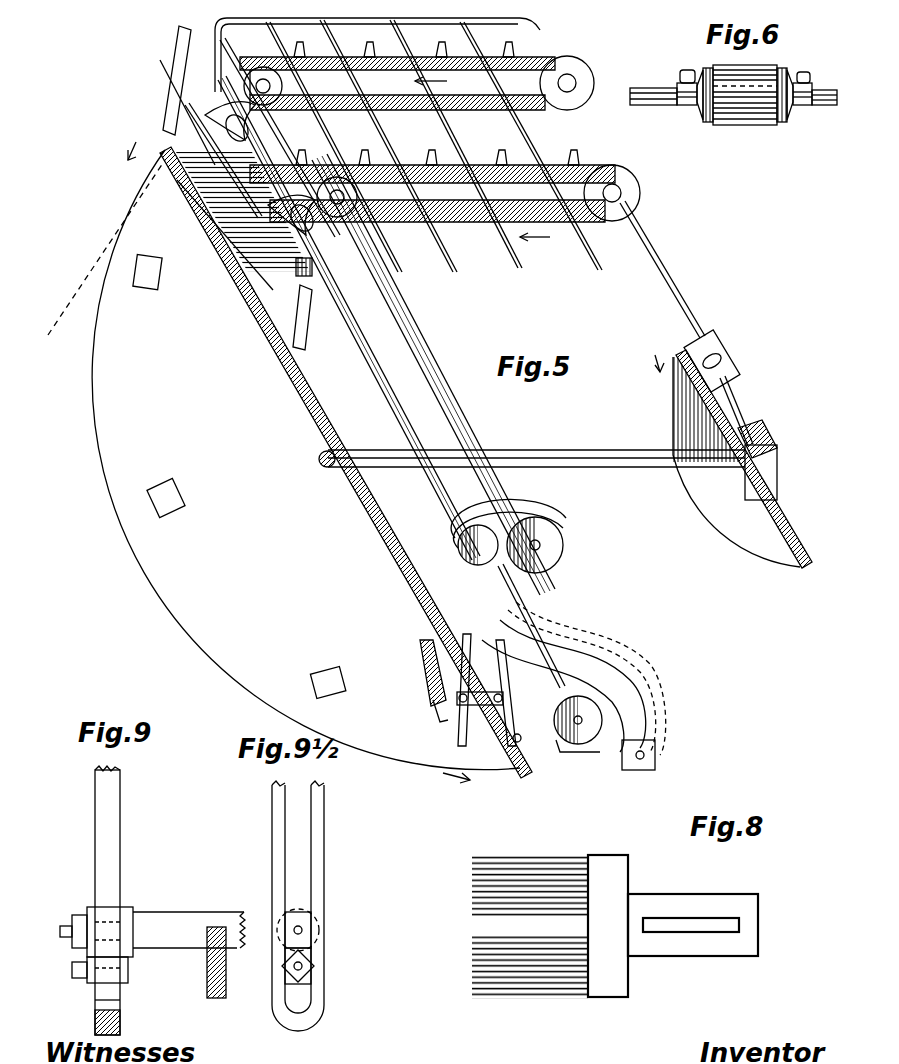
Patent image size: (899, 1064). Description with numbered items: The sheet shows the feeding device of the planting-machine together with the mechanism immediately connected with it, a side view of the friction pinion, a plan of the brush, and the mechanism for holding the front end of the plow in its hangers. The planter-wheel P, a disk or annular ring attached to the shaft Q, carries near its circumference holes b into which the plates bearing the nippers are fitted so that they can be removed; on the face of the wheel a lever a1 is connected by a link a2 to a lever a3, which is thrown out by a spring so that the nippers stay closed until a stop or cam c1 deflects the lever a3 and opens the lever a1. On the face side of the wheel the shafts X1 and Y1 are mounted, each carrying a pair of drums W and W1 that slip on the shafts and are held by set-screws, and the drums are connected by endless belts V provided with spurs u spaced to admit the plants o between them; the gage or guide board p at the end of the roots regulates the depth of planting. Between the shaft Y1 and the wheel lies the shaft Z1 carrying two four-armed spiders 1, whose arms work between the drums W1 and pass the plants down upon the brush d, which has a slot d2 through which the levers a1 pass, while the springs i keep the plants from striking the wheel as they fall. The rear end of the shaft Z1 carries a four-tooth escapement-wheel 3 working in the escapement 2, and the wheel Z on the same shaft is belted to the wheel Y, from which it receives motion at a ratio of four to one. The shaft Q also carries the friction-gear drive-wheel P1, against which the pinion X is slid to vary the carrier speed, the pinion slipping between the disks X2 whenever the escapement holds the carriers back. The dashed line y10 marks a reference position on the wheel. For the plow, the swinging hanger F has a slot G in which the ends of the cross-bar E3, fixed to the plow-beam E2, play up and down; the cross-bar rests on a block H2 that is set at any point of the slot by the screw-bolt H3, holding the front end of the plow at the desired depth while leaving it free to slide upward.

In FIG. 5, the four-armed spider 1 is at (232, 118).
In FIG. 5, the escapement 2 is at (630, 712).
In FIG. 5, the four-tooth escapement-wheel 3 is at (572, 745).
In FIG. 5, the plant o is at (318, 48).
In FIG. 5, the spur u is at (305, 50).
In FIG. 5, the gage or guide board p is at (425, 37).
In FIG. 5, the endless belt or chain V is at (555, 60).
In FIG. 5, the drum W is at (600, 83).
In FIG. 5, the drum W1 is at (330, 115).
In FIG. 5, the pinion X is at (728, 352).
In FIG. 6, the pinion X is at (750, 126).
In FIG. 5, the shaft X1 is at (662, 278).
In FIG. 6, the shaft X1 is at (655, 106).
In FIG. 6, the disk X2 is at (806, 128).
In FIG. 5, the wheel Y is at (560, 538).
In FIG. 5, the shaft Y1 is at (402, 325).
In FIG. 5, the wheel Z is at (470, 556).
In FIG. 5, the shaft Z1 is at (388, 388).
In FIG. 5, the shaft Q is at (610, 452).
In FIG. 5, the planter-wheel P is at (312, 462).
In FIG. 5, the friction-gear drive-wheel P1 is at (733, 459).
In FIG. 5, the hole b is at (148, 272).
In FIG. 5, the brush d is at (262, 262).
In FIG. 8, the brush d is at (580, 898).
In FIG. 8, the slot d2 is at (574, 925).
In FIG. 5, the spring i is at (186, 70).
In FIG. 5, the reference line y10 is at (105, 257).
In FIG. 5, the lever a1 is at (508, 700).
In FIG. 5, the link a2 is at (480, 660).
In FIG. 5, the lever a3 is at (462, 712).
In FIG. 5, the stop or cam c1 is at (425, 672).
In FIG. 9, the swinging hanger F is at (112, 808).
The swinging hanger F is at (318, 818).
The slot G is at (300, 805).
In FIG. 9, the block or stop H2 is at (72, 925).
The block or stop H2 is at (305, 930).
In FIG. 9, the screw-bolt H3 is at (78, 975).
The screw-bolt H3 is at (313, 966).
In FIG. 9, the plow-beam E2 is at (210, 996).
In FIG. 9, the cross-bar E3 is at (175, 935).